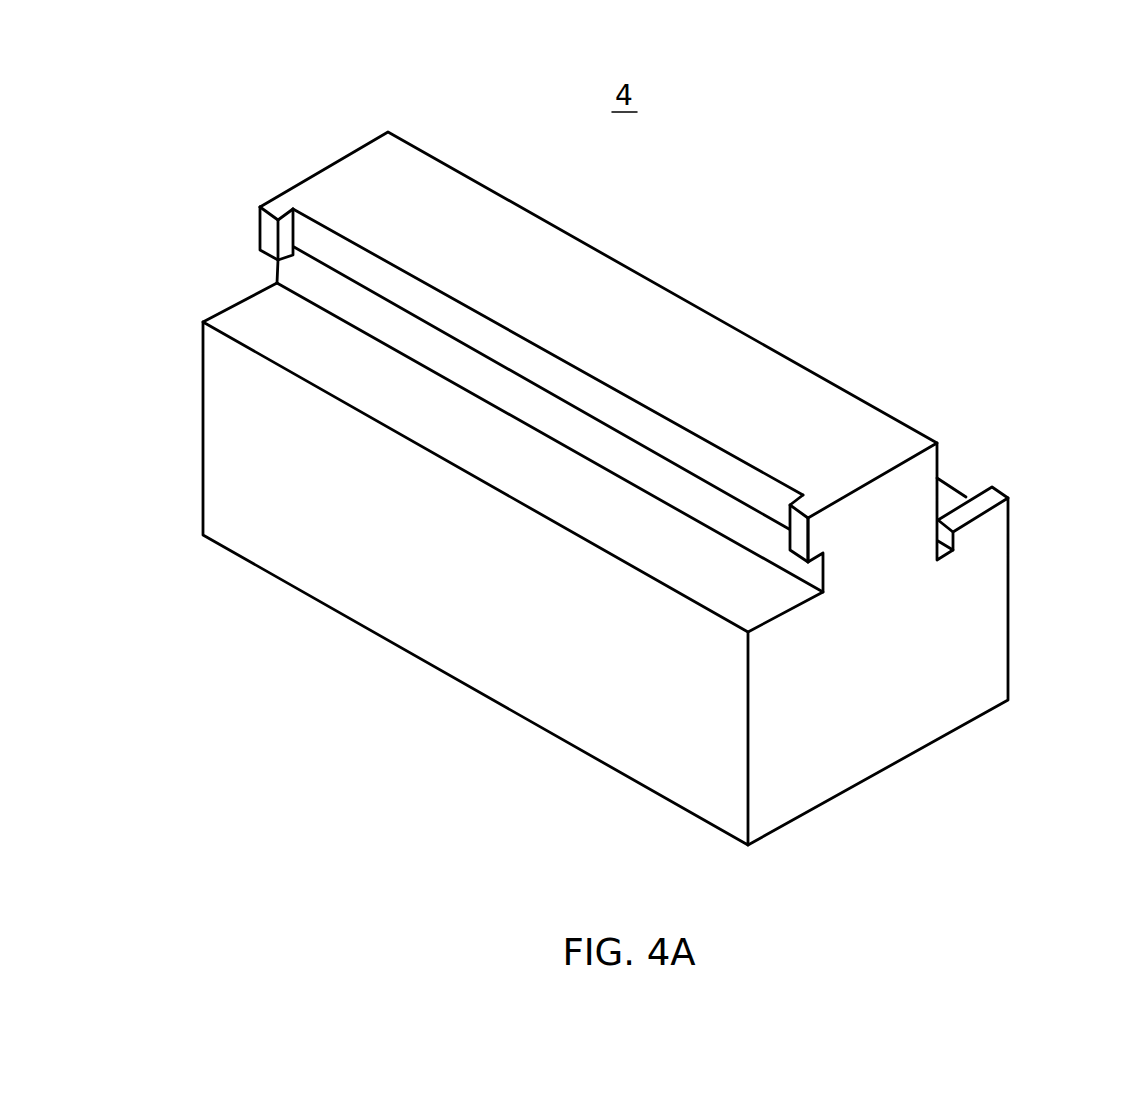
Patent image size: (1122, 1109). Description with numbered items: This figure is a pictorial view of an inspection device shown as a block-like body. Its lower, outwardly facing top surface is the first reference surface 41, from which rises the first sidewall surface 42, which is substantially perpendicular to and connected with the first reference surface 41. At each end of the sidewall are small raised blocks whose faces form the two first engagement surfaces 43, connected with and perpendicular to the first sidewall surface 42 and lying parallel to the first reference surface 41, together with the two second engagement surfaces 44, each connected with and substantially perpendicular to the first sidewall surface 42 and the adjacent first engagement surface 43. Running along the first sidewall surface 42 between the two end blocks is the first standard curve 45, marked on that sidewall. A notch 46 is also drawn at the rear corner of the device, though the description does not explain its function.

The first reference surface 41 is at (470, 452).
The first sidewall surface 42 is at (308, 275).
The first engagement surfaces 43 is at (270, 264).
The second engagement surfaces 44 is at (288, 231).
The first standard curve 45 is at (370, 277).
The notch 46 is at (948, 497).